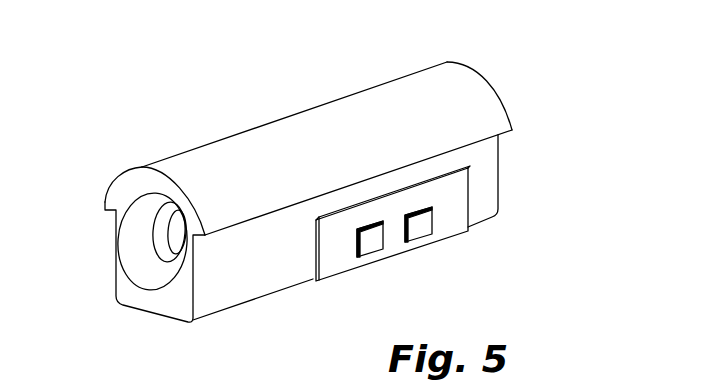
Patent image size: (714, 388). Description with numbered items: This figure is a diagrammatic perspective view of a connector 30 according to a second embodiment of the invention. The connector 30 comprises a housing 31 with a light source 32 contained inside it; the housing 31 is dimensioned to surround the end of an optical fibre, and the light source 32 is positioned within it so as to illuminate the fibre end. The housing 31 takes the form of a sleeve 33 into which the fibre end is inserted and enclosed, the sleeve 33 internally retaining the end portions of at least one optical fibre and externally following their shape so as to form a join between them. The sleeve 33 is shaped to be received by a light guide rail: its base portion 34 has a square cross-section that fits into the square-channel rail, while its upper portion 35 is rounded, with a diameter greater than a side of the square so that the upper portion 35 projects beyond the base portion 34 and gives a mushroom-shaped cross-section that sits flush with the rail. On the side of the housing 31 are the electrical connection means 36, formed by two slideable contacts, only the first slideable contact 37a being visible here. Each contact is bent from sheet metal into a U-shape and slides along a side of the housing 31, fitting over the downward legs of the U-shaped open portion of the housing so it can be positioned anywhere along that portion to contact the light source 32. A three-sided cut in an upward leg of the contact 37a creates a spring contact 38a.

The connector 30 is at (492, 47).
The housing 31 is at (488, 107).
The light source 32 is at (177, 233).
The sleeve 33 is at (332, 115).
The base portion 34 is at (203, 305).
The upper portion 35 is at (218, 150).
The electrical connection means 36 is at (330, 272).
The first slideable contact 37a is at (422, 232).
The spring contact 38a is at (370, 248).